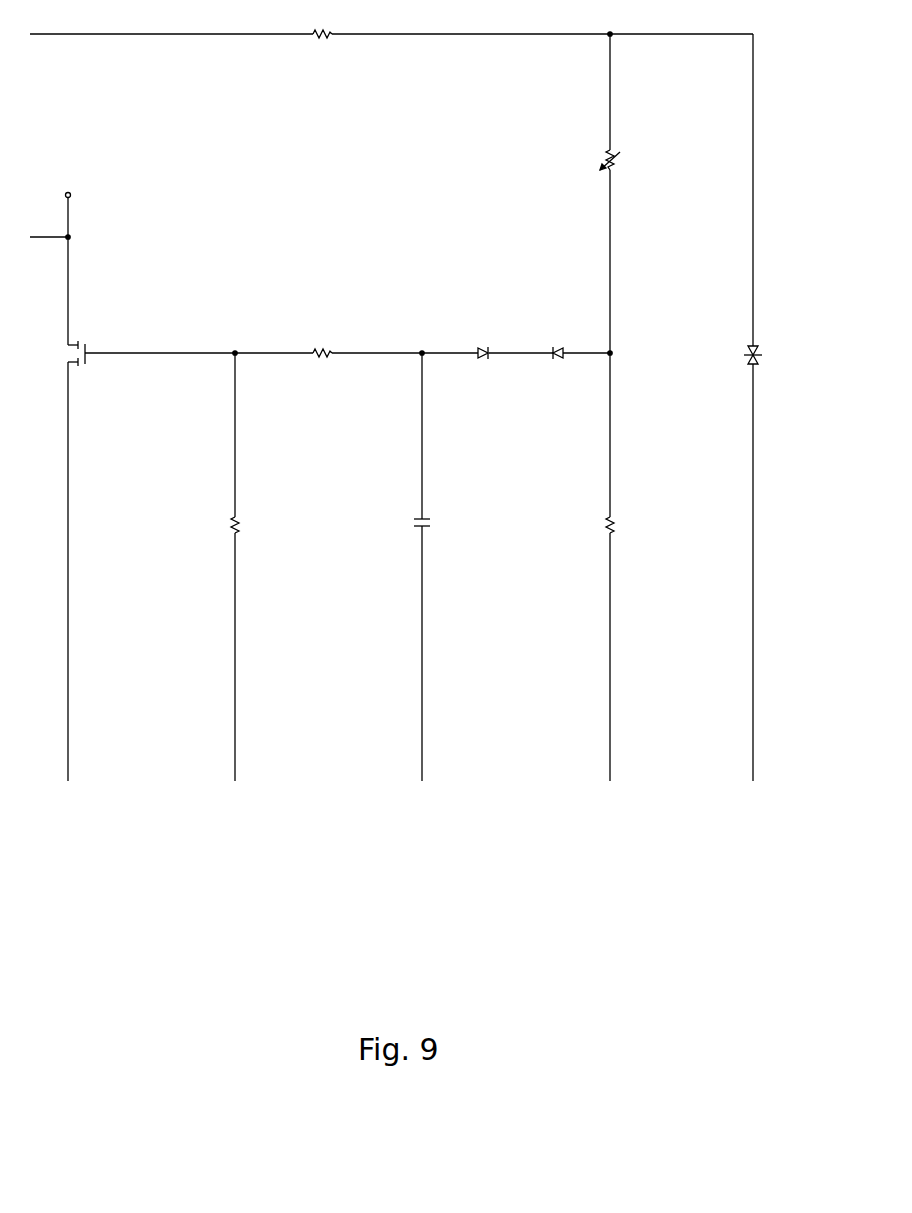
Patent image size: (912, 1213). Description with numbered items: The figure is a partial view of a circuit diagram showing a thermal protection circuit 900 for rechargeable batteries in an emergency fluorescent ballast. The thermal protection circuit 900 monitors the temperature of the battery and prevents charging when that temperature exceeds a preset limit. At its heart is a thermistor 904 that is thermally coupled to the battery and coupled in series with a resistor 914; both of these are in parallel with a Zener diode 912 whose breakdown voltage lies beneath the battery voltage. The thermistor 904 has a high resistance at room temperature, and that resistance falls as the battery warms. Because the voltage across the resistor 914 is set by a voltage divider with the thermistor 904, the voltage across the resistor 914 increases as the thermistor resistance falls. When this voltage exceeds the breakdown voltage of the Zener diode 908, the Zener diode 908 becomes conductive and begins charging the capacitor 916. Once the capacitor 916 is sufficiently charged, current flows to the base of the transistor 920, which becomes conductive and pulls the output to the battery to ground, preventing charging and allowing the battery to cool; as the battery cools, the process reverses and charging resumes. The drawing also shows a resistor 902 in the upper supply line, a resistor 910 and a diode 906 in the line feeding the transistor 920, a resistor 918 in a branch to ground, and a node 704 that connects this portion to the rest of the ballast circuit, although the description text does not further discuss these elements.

The input node 704 is at (70, 193).
The thermal protection circuit 900 is at (316, 782).
The resistor 902 is at (312, 36).
The thermistor 904 is at (605, 168).
The diode 906 is at (570, 345).
The Zener diode 908 is at (489, 345).
The resistor 910 is at (335, 345).
The Zener diode 912 is at (760, 353).
The resistor 914 is at (615, 528).
The capacitor 916 is at (430, 521).
The resistor 918 is at (238, 528).
The transistor 920 is at (87, 368).